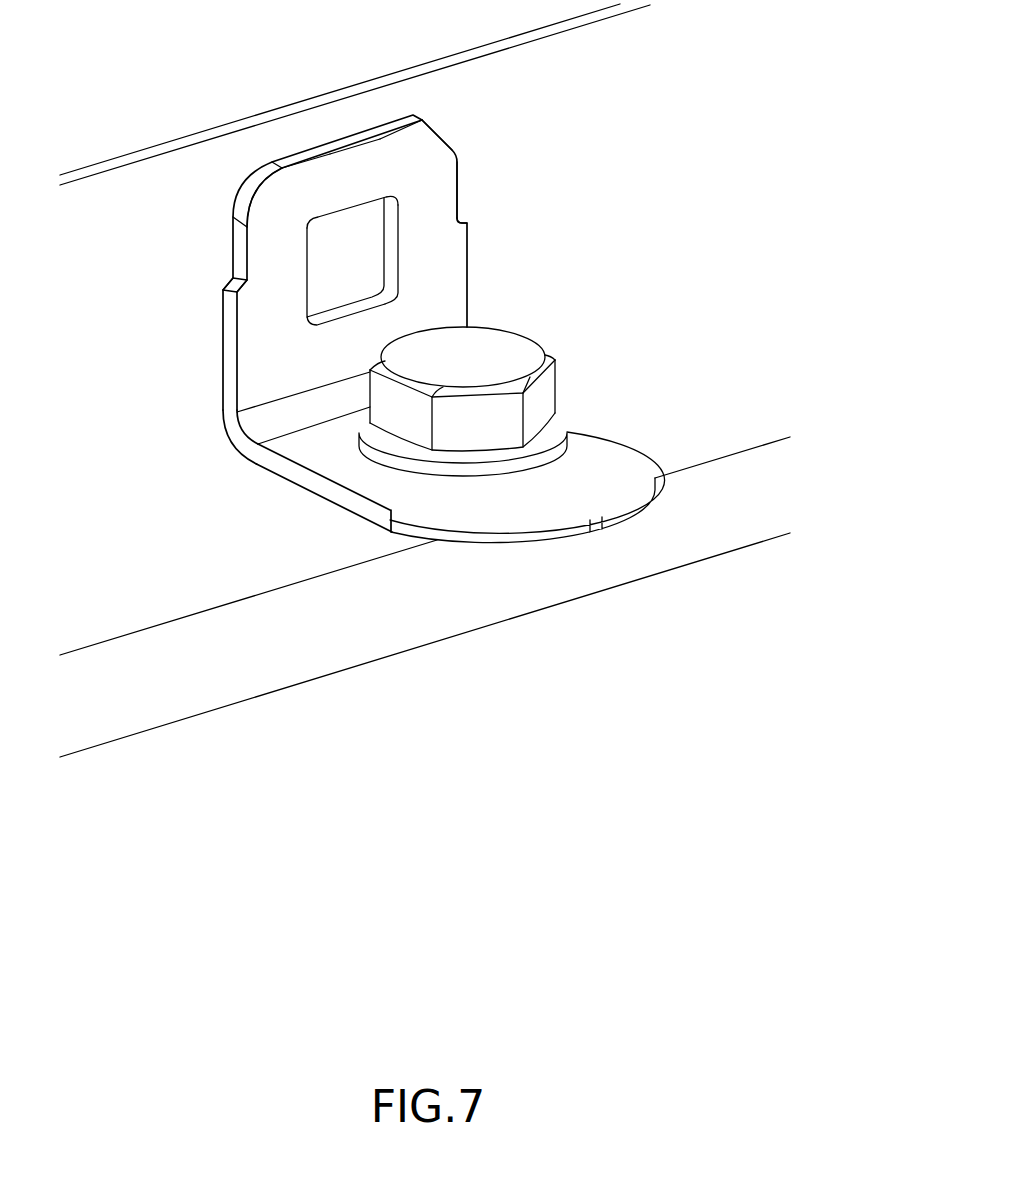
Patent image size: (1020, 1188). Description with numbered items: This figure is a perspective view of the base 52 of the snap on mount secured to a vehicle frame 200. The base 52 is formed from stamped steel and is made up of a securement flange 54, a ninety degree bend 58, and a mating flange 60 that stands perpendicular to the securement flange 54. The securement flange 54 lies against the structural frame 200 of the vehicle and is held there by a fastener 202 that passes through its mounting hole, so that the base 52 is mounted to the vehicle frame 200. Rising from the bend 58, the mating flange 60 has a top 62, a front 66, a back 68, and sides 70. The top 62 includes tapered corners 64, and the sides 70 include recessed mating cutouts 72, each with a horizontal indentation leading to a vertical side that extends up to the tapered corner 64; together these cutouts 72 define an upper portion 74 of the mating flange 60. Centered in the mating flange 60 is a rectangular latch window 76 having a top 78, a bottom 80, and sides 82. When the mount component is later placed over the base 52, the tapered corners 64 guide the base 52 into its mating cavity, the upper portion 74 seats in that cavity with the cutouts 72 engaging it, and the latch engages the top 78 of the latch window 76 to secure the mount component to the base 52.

The base 52 is at (623, 437).
The securement flange 54 is at (367, 483).
The 90 degree bend 58 is at (260, 425).
The mating flange 60 is at (262, 385).
The top 62 is at (333, 145).
The tapered corners 64 is at (442, 140).
The front 66 is at (267, 205).
The back 68 is at (385, 124).
The sides 70 is at (457, 182).
The recessed mating cutouts 72 is at (460, 220).
The upper portion 74 is at (298, 188).
The latch window 76 is at (328, 298).
The top 78 is at (335, 217).
The bottom 80 is at (358, 303).
The sides 82 is at (305, 282).
The vehicle frame 200 is at (728, 433).
The fastener 202 is at (500, 347).